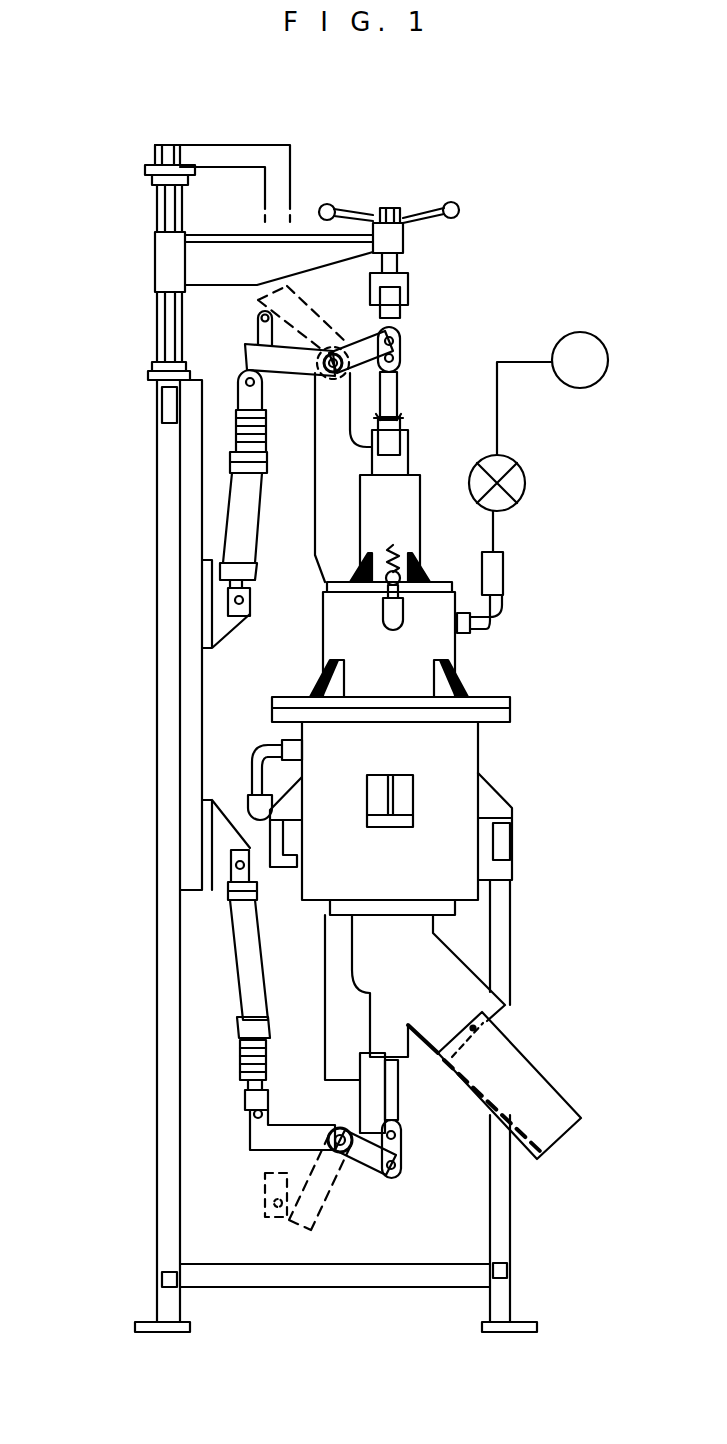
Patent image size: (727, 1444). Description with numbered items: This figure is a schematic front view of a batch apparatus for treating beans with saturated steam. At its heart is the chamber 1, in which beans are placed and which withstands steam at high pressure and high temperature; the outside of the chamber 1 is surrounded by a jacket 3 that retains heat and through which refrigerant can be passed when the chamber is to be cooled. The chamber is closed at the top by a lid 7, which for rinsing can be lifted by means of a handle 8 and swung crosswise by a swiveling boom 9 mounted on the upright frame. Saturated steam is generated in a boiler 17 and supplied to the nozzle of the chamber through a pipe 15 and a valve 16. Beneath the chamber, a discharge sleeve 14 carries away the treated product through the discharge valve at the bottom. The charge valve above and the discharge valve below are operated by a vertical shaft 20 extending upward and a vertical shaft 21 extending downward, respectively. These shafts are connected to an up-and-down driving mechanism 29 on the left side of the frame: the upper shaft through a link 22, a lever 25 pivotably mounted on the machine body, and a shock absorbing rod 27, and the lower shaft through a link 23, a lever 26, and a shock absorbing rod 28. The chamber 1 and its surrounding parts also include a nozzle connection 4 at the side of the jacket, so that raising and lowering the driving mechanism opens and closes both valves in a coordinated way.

The chamber 1 is at (445, 642).
The jacket 3 is at (460, 862).
The nozzle pipe 4 is at (250, 777).
The lid 7 is at (508, 705).
The handle 8 is at (457, 203).
The swiveling boom 9 is at (305, 240).
The discharge sleeve 14 is at (470, 990).
The pipe 15 is at (478, 633).
The valve 16 is at (523, 490).
The boiler 17 is at (580, 332).
The vertical shaft 20 is at (400, 397).
The vertical shaft 21 is at (402, 1105).
The link 22 is at (405, 352).
The link 23 is at (401, 1150).
The lever 25 is at (355, 330).
The lever 26 is at (360, 1167).
The shock absorbing rod 27 is at (230, 468).
The shock absorbing rod 28 is at (240, 943).
The up-and-down driving mechanism 29 is at (190, 687).